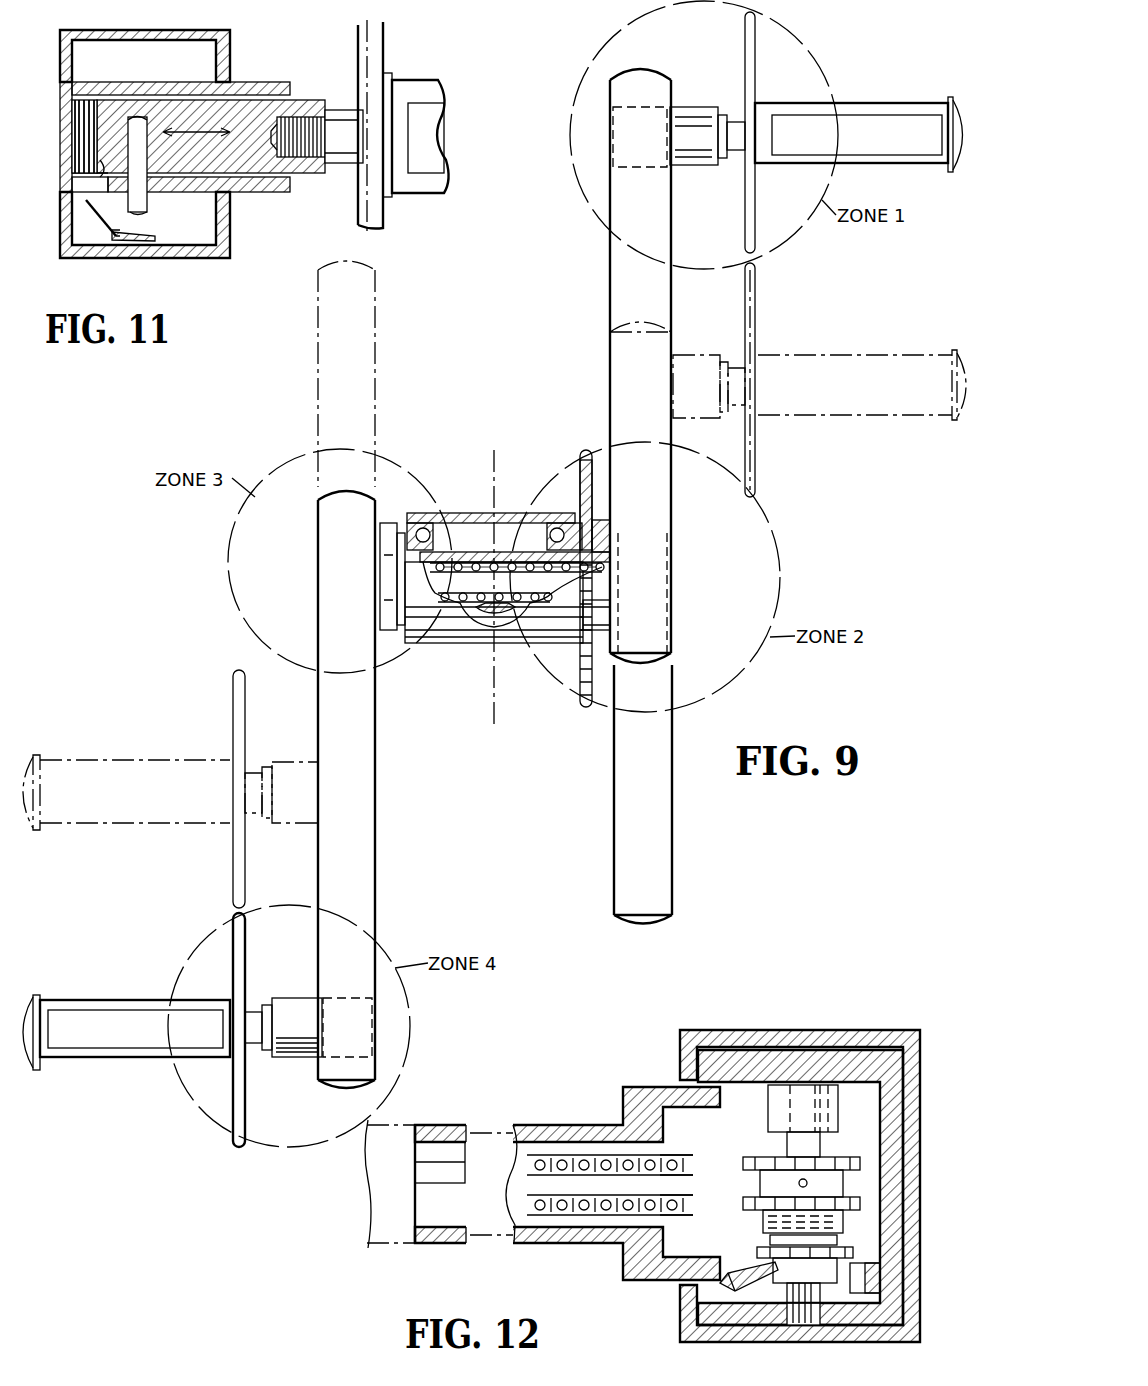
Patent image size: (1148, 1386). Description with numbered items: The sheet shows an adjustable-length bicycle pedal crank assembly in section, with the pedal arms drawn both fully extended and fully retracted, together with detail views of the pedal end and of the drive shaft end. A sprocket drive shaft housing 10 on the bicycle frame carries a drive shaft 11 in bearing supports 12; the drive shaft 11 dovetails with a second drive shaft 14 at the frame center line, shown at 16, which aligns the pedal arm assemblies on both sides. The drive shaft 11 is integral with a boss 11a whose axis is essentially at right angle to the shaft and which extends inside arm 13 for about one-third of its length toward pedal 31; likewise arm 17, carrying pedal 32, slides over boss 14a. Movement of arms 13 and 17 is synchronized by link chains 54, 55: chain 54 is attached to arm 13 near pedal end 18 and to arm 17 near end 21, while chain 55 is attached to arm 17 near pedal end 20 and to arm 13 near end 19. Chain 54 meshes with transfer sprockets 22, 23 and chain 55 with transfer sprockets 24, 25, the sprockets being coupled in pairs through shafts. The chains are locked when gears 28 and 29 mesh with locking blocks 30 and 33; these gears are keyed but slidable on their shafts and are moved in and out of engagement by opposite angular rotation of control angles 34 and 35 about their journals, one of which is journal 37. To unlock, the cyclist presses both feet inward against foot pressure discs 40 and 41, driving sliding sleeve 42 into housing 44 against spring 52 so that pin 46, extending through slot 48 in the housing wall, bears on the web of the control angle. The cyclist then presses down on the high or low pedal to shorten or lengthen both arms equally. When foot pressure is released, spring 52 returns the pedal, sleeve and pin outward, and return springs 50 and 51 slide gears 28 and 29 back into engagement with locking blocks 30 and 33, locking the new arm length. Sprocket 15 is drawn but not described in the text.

In FIG. 9, the sprocket drive shaft housing 10 is at (438, 512).
In FIG. 9, the drive shaft 11 is at (538, 562).
In FIG. 12, the drive shaft 11 is at (542, 1174).
In FIG. 12, the boss 11a is at (800, 1172).
In FIG. 9, the bearing supports 12 is at (575, 520).
In FIG. 11, the arm 13 is at (230, 35).
In FIG. 9, the arm 13 is at (668, 495).
In FIG. 12, the arm 13 is at (836, 1187).
In FIG. 9, the drive shaft 14 is at (478, 593).
In FIG. 12, the drive shaft 14 is at (565, 1125).
In FIG. 12, the boss 14a is at (745, 1065).
In FIG. 9, the sprocket 15 is at (585, 700).
In FIG. 9, the dovetail 16 is at (487, 610).
In FIG. 9, the arm 17 is at (370, 887).
In FIG. 12, the arm 17 is at (893, 1110).
In FIG. 9, the pedal end 18 is at (640, 72).
In FIG. 9, the end 19 is at (665, 660).
In FIG. 9, the pedal end 20 is at (330, 1082).
In FIG. 9, the end 21 is at (345, 490).
In FIG. 12, the transfer sprocket 22 is at (858, 1127).
In FIG. 12, the transfer sprocket 23 is at (860, 1160).
In FIG. 12, the transfer sprocket 24 is at (858, 1186).
In FIG. 12, the transfer sprocket 25 is at (860, 1200).
In FIG. 12, the locking gear 28 is at (865, 1277).
In FIG. 12, the locking gear 29 is at (853, 1250).
In FIG. 12, the locking block 30 is at (912, 1278).
In FIG. 11, the pedal 31 is at (418, 85).
In FIG. 9, the pedal 31 is at (880, 105).
In FIG. 9, the pedal 32 is at (125, 998).
In FIG. 12, the locking block 33 is at (880, 1290).
In FIG. 11, the control angle 34 is at (150, 241).
In FIG. 12, the control angle 34 is at (684, 1289).
In FIG. 12, the control angle 35 is at (668, 1283).
In FIG. 11, the journal 37 is at (118, 240).
In FIG. 11, the foot pressure disc 40 is at (385, 27).
In FIG. 9, the foot pressure disc 40 is at (750, 65).
In FIG. 9, the foot pressure disc 41 is at (233, 940).
In FIG. 11, the sliding sleeve 42 is at (308, 100).
In FIG. 9, the sliding sleeve 42 is at (730, 160).
In FIG. 11, the housing 44 is at (250, 82).
In FIG. 9, the housing 44 is at (700, 107).
In FIG. 11, the pin 46 is at (148, 197).
In FIG. 11, the slot 48 is at (105, 160).
In FIG. 12, the return spring 50 is at (868, 1215).
In FIG. 12, the return spring 51 is at (837, 1240).
In FIG. 11, the spring 52 is at (75, 118).
In FIG. 12, the link chain 54 is at (597, 1155).
In FIG. 12, the link chain 55 is at (580, 1215).